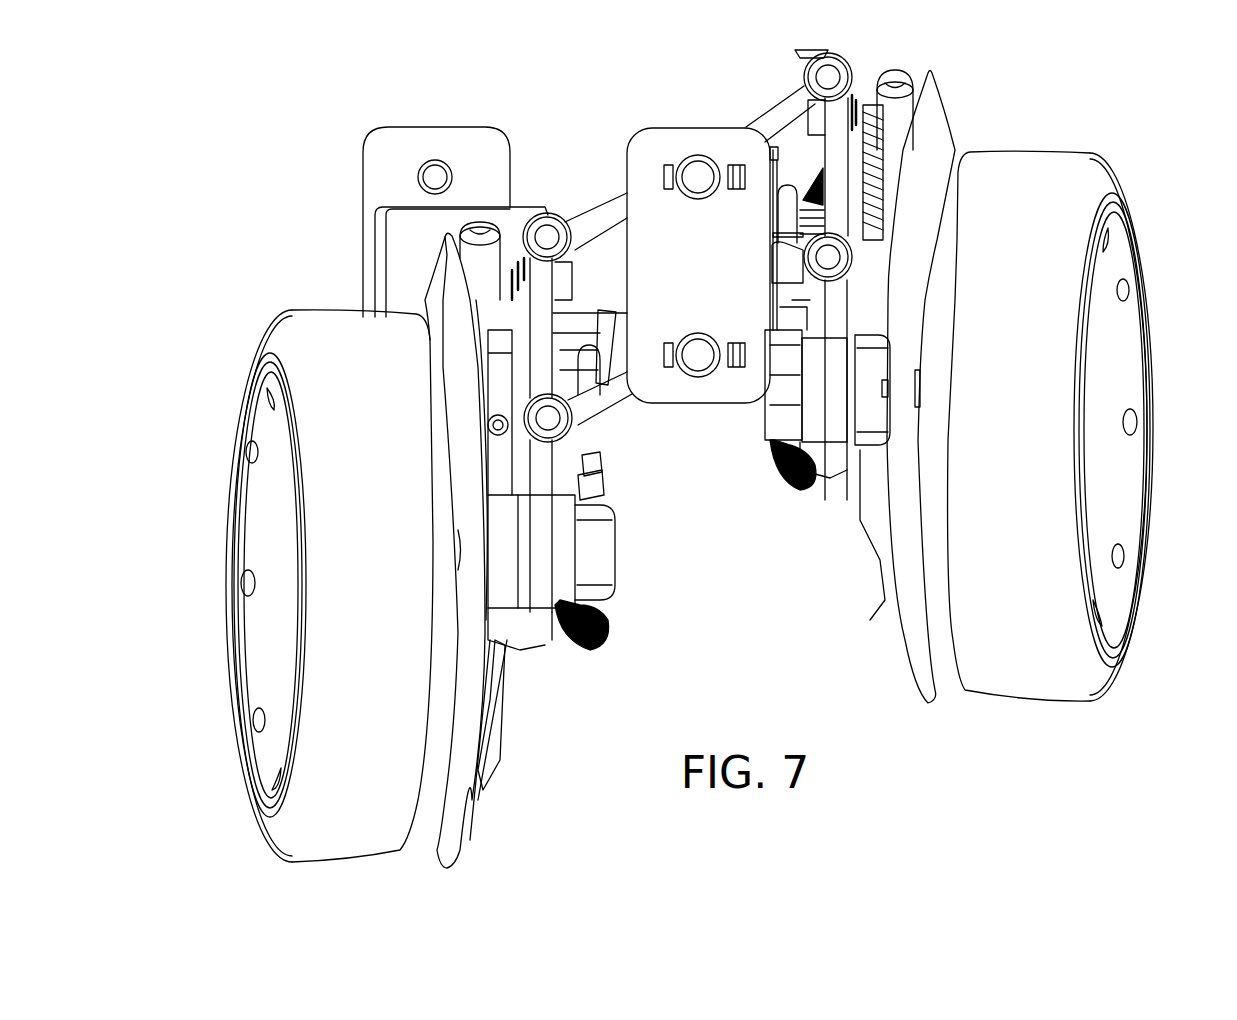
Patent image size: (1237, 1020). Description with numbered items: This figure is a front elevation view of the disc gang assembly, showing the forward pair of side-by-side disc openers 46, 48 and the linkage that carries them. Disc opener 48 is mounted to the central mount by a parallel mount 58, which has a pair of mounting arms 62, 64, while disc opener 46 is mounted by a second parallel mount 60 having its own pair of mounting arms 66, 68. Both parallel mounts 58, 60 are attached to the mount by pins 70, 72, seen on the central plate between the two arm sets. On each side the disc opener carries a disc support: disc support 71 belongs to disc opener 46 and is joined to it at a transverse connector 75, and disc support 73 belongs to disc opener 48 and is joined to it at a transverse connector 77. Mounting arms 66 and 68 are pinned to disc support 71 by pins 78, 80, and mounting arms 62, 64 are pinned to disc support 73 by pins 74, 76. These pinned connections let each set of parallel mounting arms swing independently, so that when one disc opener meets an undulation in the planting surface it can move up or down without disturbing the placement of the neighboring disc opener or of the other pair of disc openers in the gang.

The disc opener 46 is at (935, 117).
The disc opener 48 is at (440, 290).
The parallel mount 58 is at (655, 105).
The parallel mount 60 is at (697, 490).
The mounting arm 62 is at (612, 195).
The mounting arm 64 is at (612, 408).
The mounting arm 66 is at (763, 110).
The mounting arm 68 is at (790, 268).
The pin 70 is at (706, 168).
The disc support 71 is at (840, 143).
The pin 72 is at (706, 368).
The disc support 73 is at (512, 263).
The pin 74 is at (545, 225).
The transverse connector 75 is at (833, 428).
The pin 76 is at (597, 466).
The transverse connector 77 is at (538, 568).
The pin 78 is at (835, 68).
The pin 80 is at (870, 290).